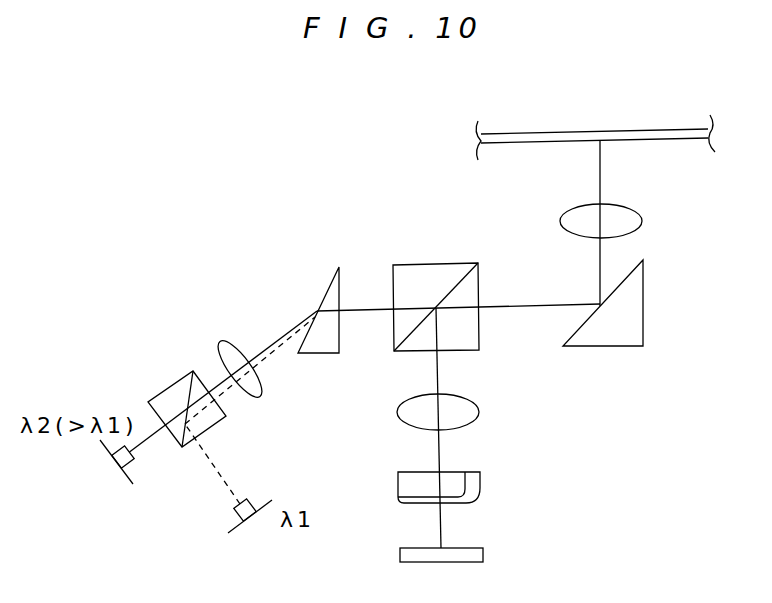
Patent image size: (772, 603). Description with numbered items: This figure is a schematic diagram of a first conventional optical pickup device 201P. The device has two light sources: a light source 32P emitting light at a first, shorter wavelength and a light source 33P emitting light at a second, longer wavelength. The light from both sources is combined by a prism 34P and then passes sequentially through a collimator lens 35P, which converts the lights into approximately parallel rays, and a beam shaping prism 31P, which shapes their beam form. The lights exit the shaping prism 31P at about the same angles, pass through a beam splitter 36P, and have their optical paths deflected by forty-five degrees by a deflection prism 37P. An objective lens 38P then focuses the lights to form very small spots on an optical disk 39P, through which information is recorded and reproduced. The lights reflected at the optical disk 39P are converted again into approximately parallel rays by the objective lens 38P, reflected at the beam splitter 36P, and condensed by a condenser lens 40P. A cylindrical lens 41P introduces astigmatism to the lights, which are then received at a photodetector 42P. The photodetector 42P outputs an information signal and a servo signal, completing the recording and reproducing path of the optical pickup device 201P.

The optical pickup device 201P is at (118, 203).
The beam shaping prism 31P is at (327, 290).
The light source 32P is at (253, 517).
The light source 33P is at (117, 468).
The prism 34P is at (168, 385).
The collimator lens 35P is at (222, 345).
The beam splitter 36P is at (437, 263).
The deflection prism 37P is at (645, 302).
The objective lens 38P is at (630, 217).
The optical disk 39P is at (538, 145).
The condenser lens 40P is at (466, 407).
The cylindrical lens 41P is at (477, 483).
The photodetector 42P is at (478, 556).